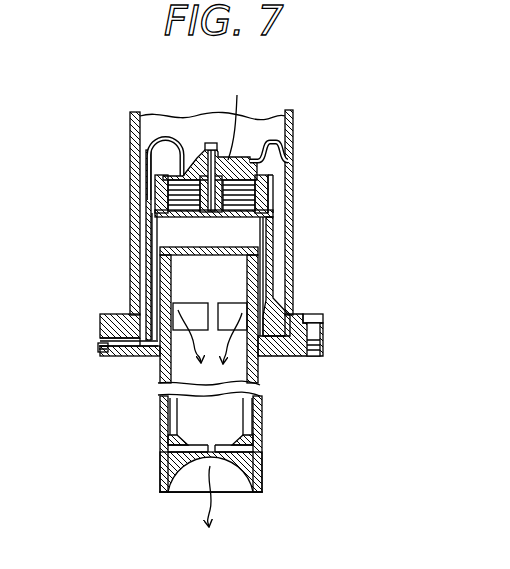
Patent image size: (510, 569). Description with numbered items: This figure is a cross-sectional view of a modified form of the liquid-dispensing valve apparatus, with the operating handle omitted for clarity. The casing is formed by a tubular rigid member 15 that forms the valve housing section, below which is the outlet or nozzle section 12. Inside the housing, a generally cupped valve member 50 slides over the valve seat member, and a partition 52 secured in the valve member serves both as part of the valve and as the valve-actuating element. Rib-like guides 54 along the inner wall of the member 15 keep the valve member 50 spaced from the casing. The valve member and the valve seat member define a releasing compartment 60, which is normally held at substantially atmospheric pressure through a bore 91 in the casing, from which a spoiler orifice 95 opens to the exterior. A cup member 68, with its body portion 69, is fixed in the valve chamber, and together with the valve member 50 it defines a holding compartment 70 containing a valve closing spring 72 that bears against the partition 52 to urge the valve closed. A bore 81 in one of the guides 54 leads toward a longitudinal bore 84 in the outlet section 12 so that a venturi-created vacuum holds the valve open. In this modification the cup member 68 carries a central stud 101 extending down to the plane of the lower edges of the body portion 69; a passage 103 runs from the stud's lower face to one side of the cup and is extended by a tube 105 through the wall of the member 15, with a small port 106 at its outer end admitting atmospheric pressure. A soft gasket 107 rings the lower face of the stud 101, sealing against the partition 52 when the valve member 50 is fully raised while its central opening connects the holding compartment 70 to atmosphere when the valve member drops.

The outlet or nozzle section 12 is at (266, 449).
The tubular rigid member 15 is at (293, 216).
The valve member 50 is at (152, 234).
The partition 52 is at (165, 222).
The guides 54 is at (282, 258).
The releasing compartment 60 is at (266, 233).
The cup member 68 is at (209, 147).
The body portion 69 is at (154, 184).
The holding compartment 70 is at (274, 196).
The valve closing spring 72 is at (160, 194).
The bore 81 is at (150, 266).
The longitudinal bore 84 is at (165, 432).
The bore 91 is at (256, 264).
The spoiler orifice 95 is at (262, 418).
The central stud 101 is at (222, 217).
The passage 103 is at (216, 152).
The tube 105 is at (252, 156).
The port 106 is at (294, 161).
The gasket 107 is at (204, 216).